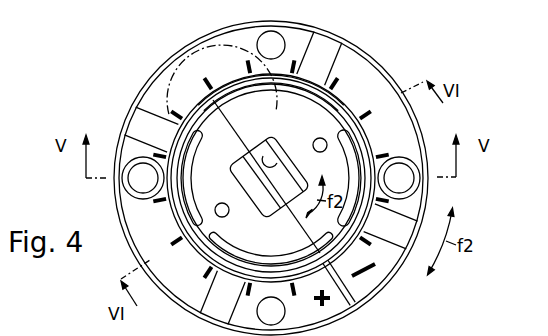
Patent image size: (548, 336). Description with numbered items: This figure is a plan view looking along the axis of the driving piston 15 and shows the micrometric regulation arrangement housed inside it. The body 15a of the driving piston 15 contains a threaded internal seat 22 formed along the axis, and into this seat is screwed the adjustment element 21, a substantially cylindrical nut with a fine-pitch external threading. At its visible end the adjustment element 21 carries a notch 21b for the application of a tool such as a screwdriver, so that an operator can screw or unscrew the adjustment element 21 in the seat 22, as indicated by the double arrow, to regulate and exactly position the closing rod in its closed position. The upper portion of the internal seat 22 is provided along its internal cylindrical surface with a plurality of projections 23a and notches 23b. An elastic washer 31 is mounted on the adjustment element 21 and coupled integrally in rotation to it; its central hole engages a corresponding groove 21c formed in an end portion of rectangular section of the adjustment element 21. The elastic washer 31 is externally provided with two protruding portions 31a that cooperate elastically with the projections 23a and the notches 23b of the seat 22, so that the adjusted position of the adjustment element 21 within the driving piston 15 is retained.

The driving piston 15 is at (390, 63).
The body of the driving piston 15a is at (166, 110).
The adjustment element 21 is at (243, 175).
The notch 21b is at (293, 160).
The groove 21c is at (297, 159).
The internal seat 22 is at (403, 140).
The projections 23a is at (326, 114).
The notches 23b is at (252, 118).
The elastic washer 31 is at (282, 252).
The protruding portions 31a is at (219, 96).